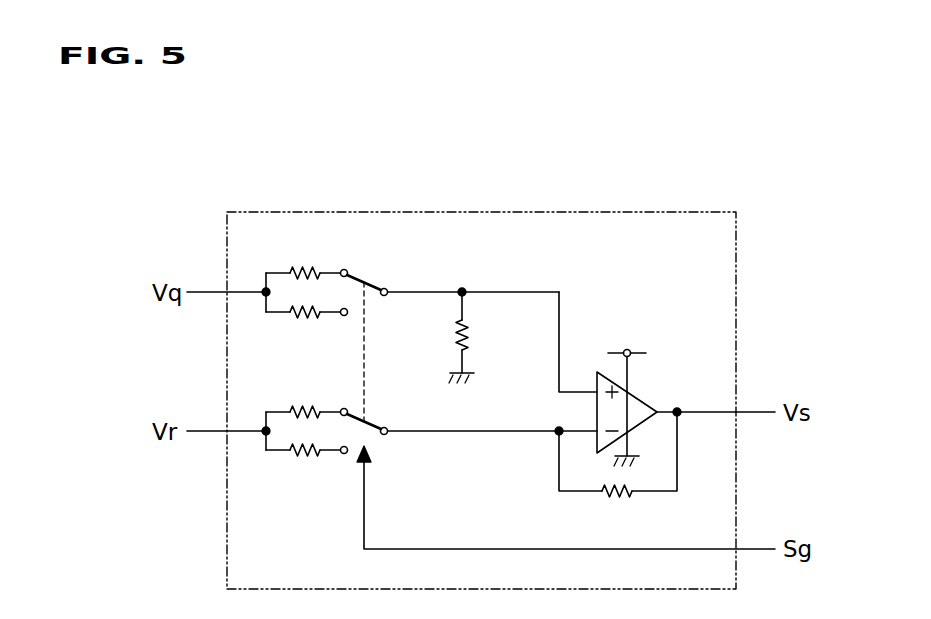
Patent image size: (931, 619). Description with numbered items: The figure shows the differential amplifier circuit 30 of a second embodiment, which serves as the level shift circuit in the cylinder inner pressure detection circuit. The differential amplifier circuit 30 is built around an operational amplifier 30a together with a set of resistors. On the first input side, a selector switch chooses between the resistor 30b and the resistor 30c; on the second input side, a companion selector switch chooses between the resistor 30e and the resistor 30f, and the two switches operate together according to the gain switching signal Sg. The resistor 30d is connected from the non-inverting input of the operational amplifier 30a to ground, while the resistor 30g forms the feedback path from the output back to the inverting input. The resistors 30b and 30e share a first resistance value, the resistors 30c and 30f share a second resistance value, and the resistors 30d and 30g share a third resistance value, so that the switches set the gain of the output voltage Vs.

The differential amplifier circuit 30 is at (524, 210).
The operational amplifier 30a is at (640, 398).
The resistor 30b is at (318, 269).
The resistor 30c is at (292, 314).
The resistor 30d is at (470, 341).
The resistor 30e is at (321, 407).
The resistor 30f is at (292, 453).
The resistor 30g is at (604, 486).